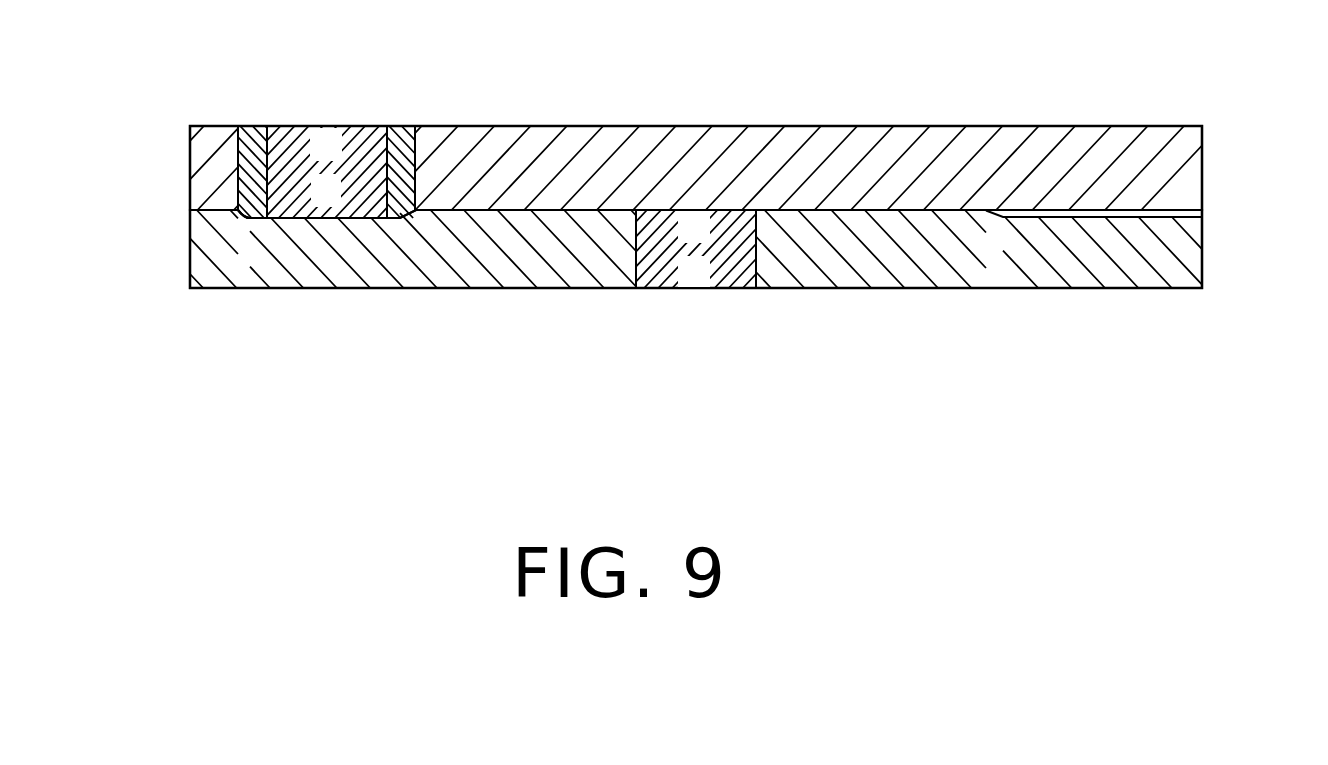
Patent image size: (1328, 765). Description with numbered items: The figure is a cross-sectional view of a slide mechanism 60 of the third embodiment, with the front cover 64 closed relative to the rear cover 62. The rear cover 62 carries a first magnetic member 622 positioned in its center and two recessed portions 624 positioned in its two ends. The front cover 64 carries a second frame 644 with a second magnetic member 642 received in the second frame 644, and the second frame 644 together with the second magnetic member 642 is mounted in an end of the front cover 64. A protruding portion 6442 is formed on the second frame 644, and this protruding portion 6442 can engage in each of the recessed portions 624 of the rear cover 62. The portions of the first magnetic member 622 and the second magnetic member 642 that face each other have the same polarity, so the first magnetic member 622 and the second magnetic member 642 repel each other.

The slide mechanism 60 is at (640, 108).
The rear cover 62 is at (1193, 270).
The first magnetic member 622 is at (737, 282).
The recessed portions 624 is at (1143, 213).
The front cover 64 is at (1175, 148).
The second magnetic member 642 is at (305, 126).
The second frame 644 is at (403, 125).
The protruding portion 6442 is at (255, 214).